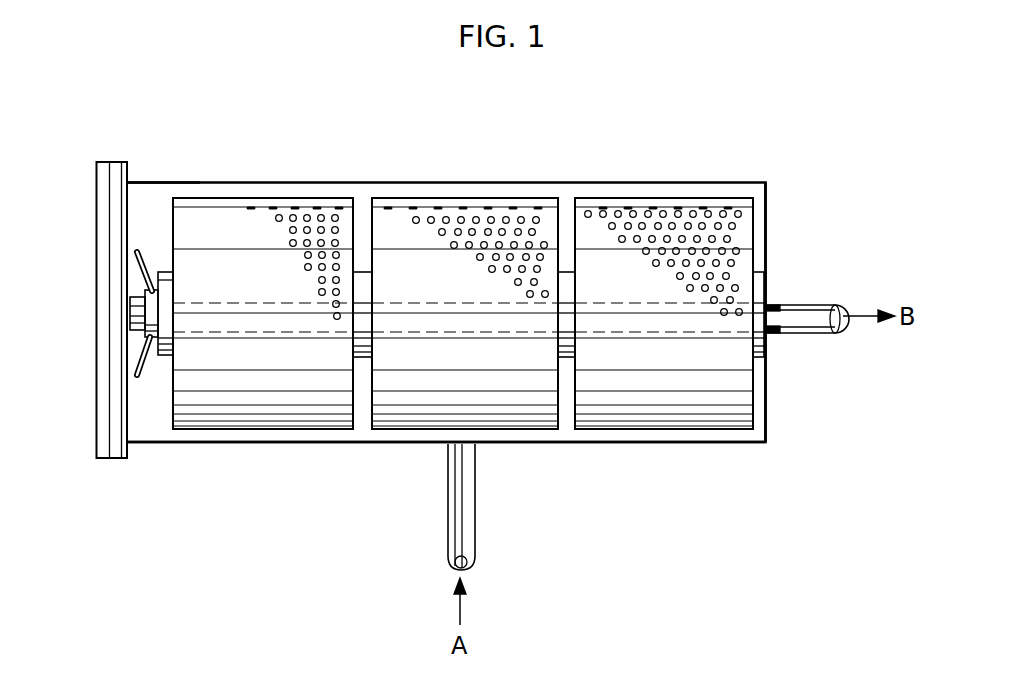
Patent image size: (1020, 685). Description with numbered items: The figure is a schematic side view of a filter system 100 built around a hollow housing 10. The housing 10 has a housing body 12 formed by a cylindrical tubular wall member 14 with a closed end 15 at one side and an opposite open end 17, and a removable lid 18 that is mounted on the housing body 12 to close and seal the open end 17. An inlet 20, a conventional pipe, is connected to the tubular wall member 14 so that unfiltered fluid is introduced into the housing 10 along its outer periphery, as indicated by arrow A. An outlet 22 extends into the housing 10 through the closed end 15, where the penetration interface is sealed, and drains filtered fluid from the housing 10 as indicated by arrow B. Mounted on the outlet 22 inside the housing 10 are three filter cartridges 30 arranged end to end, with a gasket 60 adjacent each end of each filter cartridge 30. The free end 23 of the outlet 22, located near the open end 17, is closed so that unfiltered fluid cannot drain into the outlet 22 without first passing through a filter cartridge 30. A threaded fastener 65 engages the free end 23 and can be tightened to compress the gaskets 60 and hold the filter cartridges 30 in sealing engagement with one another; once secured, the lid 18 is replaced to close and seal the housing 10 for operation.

The filter system 100 is at (748, 150).
The housing 10 is at (130, 459).
The housing body 12 is at (735, 447).
The tubular wall member 14 is at (627, 183).
The closed end 15 is at (768, 210).
The open end 17 is at (143, 180).
The removable lid 18 is at (96, 192).
The inlet 20 is at (475, 490).
The outlet 22 is at (788, 312).
The free end 23 is at (135, 313).
The filter cartridge 30 is at (253, 232).
The gasket 60 is at (363, 272).
The threaded fastener 65 is at (135, 262).